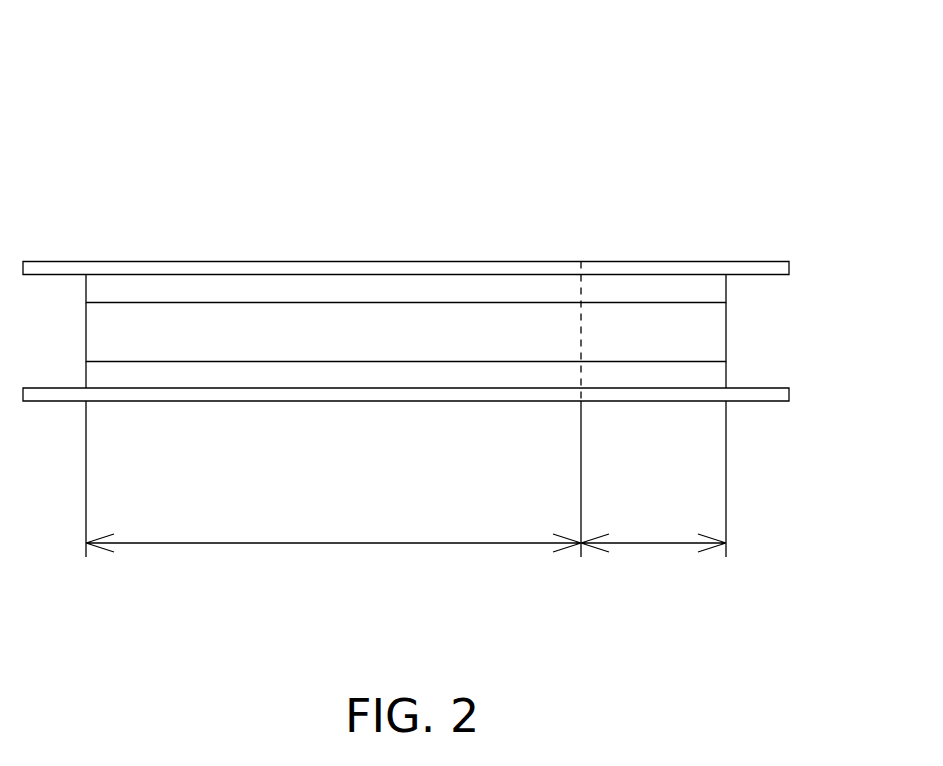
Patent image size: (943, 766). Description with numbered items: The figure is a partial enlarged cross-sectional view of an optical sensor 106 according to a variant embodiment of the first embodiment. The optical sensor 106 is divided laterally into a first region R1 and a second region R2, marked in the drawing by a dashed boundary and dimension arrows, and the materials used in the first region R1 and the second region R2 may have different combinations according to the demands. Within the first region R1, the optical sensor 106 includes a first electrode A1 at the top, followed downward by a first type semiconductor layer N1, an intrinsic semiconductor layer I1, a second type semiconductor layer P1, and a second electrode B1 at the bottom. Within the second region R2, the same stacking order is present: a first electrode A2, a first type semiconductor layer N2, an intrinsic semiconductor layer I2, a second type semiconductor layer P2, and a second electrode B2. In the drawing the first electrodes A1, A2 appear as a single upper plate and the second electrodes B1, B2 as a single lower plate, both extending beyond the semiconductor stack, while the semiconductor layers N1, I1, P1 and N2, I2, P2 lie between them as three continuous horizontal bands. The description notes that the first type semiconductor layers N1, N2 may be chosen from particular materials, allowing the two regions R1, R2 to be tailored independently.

The optical sensor 106 is at (703, 121).
The first electrode A1 is at (201, 268).
The first electrode A2 is at (607, 268).
The first type semiconductor layer N1 is at (314, 288).
The first type semiconductor layer N2 is at (657, 288).
The intrinsic semiconductor layer I1 is at (337, 351).
The intrinsic semiconductor layer I2 is at (670, 352).
The second type semiconductor layer P1 is at (314, 375).
The second type semiconductor layer P2 is at (657, 375).
The second electrode B1 is at (202, 398).
The second electrode B2 is at (607, 398).
The first region R1 is at (333, 479).
The second region R2 is at (653, 479).